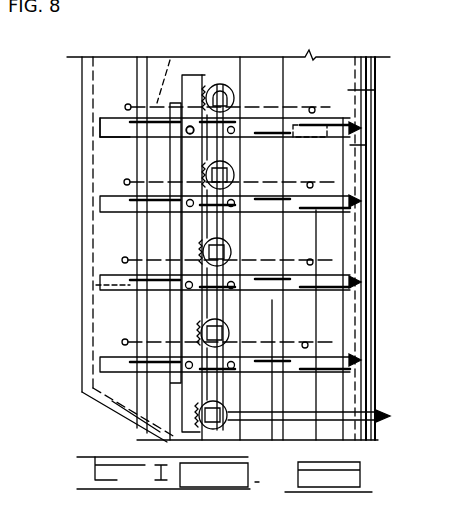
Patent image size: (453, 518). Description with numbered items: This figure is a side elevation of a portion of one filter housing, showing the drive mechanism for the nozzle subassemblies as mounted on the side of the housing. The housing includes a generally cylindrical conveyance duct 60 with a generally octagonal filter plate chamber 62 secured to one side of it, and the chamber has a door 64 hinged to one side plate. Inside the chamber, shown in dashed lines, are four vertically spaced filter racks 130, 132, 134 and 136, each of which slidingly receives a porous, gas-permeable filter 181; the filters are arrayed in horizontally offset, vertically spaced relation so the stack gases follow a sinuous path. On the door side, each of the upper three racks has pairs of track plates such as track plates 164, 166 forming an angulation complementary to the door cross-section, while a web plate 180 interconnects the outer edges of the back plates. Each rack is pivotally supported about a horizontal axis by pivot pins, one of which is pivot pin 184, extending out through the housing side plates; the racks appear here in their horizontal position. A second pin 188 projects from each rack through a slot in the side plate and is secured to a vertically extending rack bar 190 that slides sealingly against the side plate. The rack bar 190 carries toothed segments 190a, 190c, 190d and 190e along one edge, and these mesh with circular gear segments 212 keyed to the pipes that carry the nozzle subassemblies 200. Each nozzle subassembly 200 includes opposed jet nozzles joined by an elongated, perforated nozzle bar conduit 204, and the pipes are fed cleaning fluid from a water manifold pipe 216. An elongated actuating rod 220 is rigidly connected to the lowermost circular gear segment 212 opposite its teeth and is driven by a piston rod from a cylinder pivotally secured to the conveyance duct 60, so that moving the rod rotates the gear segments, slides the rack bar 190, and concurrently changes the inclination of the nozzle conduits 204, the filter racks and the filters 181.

The conveyance duct 60 is at (376, 400).
The filter plate chamber 62 is at (100, 418).
The door 64 is at (85, 184).
The filter rack 130 is at (376, 130).
The filter rack 132 is at (376, 201).
The filter rack 134 is at (376, 280).
The filter rack 136 is at (376, 362).
The track plate 164 is at (111, 116).
The track plate 166 is at (110, 131).
The web plate 180 is at (370, 143).
The filter 181 is at (96, 285).
The pivot pin 184 is at (236, 127).
The pin 188 is at (186, 134).
The rack bar 190 is at (186, 77).
The toothed segment 190a is at (211, 84).
The toothed segment 190c is at (205, 242).
The toothed segment 190d is at (212, 326).
The toothed segment 190e is at (214, 403).
The nozzle subassembly 200 is at (358, 91).
The nozzle bar conduit 204 is at (166, 53).
The circular gear segment 212 is at (227, 93).
The water manifold pipe 216 is at (226, 160).
The actuating rod 220 is at (388, 418).